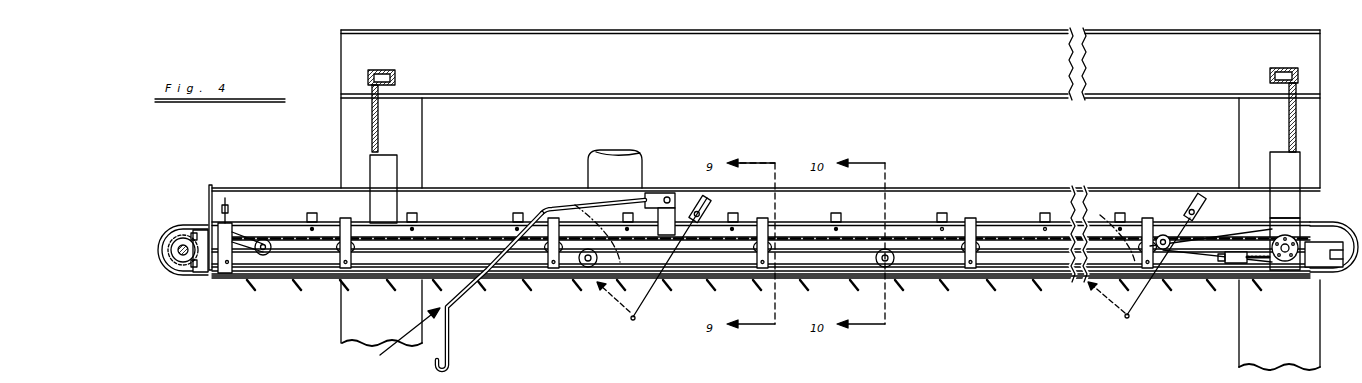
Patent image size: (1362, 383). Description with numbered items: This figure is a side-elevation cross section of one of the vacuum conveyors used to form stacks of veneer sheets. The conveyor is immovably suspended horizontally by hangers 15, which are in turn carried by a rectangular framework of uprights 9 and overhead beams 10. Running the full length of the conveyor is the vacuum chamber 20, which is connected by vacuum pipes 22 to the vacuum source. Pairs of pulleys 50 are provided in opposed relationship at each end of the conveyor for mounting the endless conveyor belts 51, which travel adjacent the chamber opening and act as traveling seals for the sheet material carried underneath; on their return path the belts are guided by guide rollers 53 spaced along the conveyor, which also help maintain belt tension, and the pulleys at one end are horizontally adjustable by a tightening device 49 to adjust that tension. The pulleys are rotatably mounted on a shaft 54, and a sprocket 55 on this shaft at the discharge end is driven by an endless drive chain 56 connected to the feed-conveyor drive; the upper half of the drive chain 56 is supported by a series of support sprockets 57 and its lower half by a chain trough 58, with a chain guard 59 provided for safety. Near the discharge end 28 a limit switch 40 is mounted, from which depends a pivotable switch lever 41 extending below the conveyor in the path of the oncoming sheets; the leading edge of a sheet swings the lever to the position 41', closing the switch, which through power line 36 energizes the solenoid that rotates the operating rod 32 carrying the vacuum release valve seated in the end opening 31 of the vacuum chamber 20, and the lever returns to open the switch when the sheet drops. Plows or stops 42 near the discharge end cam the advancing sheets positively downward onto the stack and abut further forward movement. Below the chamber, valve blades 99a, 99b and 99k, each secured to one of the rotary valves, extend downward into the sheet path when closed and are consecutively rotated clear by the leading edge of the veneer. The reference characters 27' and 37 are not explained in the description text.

The uprights 9 is at (1248, 128).
The overhead beams 10 is at (882, 88).
The hangers 15 is at (1300, 163).
The vacuum chamber 20 is at (1000, 200).
The vacuum pipes 22 is at (627, 168).
The pivot path 27' is at (1114, 230).
The discharge end 28 is at (401, 338).
The end opening 31 is at (208, 197).
The operating rod 32 is at (230, 200).
The power line 36 is at (1193, 195).
The lever arm 37 is at (1135, 312).
The limit switch 40 is at (672, 228).
The switch lever 41 is at (652, 260).
The closed-switch lever position 41' is at (593, 227).
The plows or stops 42 is at (462, 302).
The tightening device 49 is at (1240, 266).
The pulleys 50 is at (1333, 228).
The endless conveyor belts 51 is at (1320, 276).
The guide rollers 53 is at (880, 268).
The shaft 54 is at (183, 262).
The sprocket 55 is at (172, 250).
The endless drive chain 56 is at (1200, 262).
The support sprockets 57 is at (985, 245).
The chain trough 58 is at (1010, 265).
The chain guard 59 is at (972, 220).
The valve blade 99a is at (1262, 284).
The valve blade 99b is at (1210, 284).
The valve blade 99k is at (252, 282).